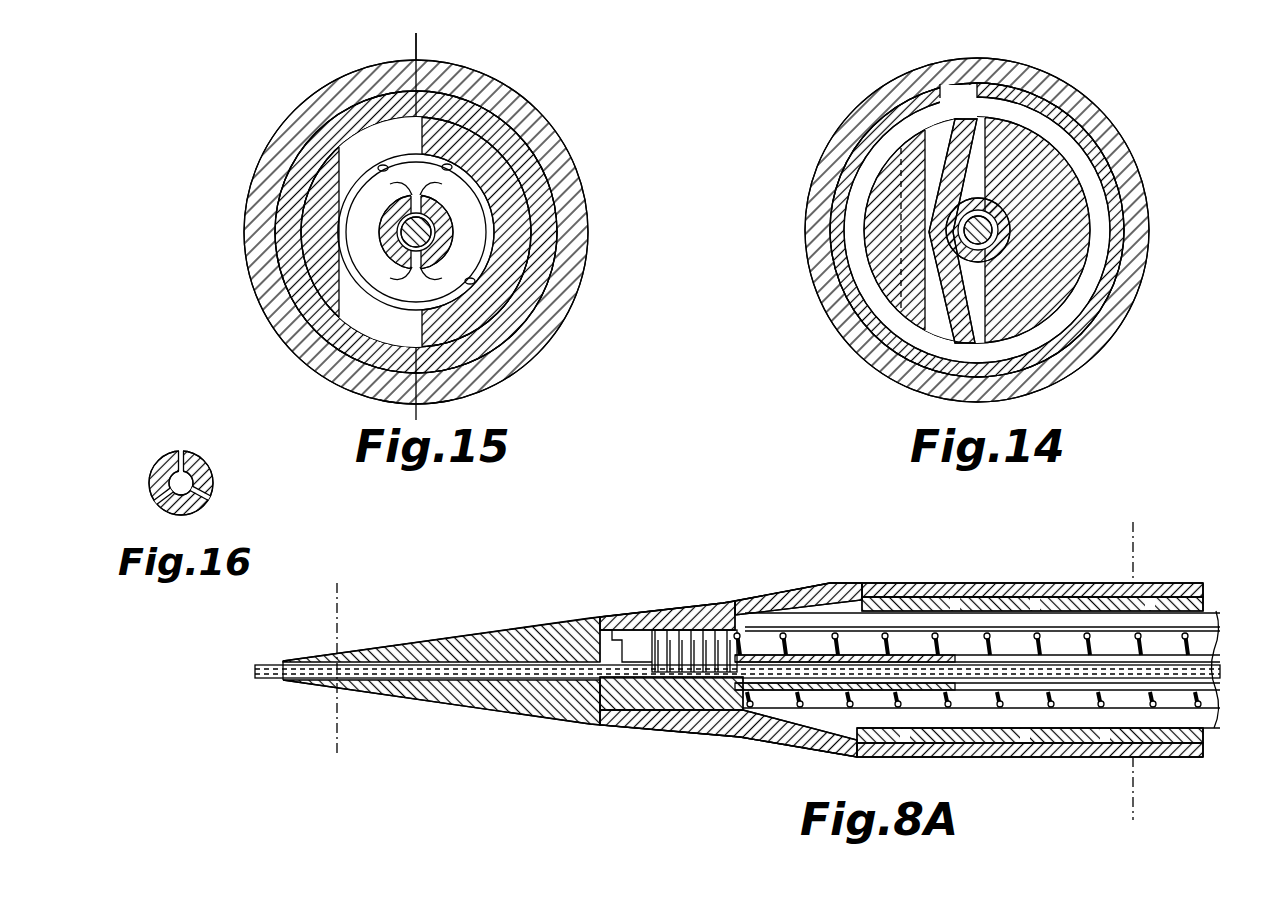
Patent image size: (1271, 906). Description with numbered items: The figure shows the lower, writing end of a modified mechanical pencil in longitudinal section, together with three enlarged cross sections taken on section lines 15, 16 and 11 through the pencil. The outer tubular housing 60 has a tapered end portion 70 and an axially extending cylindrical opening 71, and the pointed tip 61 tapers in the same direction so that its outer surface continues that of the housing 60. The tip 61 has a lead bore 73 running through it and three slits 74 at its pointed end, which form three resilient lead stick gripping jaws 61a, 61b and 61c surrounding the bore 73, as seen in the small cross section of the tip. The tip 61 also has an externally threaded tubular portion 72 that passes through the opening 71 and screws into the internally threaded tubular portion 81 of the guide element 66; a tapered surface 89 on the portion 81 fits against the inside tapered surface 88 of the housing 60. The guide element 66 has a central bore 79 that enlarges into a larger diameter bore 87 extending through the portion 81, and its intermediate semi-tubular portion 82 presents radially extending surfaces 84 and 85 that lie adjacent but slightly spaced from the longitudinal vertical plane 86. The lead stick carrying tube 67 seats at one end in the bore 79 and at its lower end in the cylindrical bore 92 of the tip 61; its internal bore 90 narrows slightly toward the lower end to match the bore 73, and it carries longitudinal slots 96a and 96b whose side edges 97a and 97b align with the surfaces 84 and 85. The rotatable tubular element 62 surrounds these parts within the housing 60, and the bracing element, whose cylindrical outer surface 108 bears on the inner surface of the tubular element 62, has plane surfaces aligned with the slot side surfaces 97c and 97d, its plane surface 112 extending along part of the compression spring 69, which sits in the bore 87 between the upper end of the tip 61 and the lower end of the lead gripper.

In FIG. 15, the cylindrical outer surface 108 is at (305, 177).
In FIG. 14, the cylindrical outer surface 108 is at (868, 207).
In FIG. 15, the radially extending surface 84 is at (419, 115).
In FIG. 14, the radially extending surface 84 is at (1025, 97).
In FIG. 15, the longitudinally extending slot 96a is at (415, 217).
In FIG. 15, the longitudinally extending slot 96b is at (416, 262).
In FIG. 15, the tubular element 62 is at (512, 143).
In FIG. 14, the tubular element 62 is at (1095, 178).
In FIG. 8A, the tubular element 62 is at (1035, 597).
In FIG. 15, the intermediate semi-tubular portion 82 is at (507, 203).
In FIG. 14, the intermediate semi-tubular portion 82 is at (1075, 220).
In FIG. 15, the larger diameter bore 87 is at (470, 292).
In FIG. 8A, the larger diameter bore 87 is at (1010, 633).
In FIG. 15, the longitudinally vertical plane 86 is at (418, 407).
In FIG. 15, the plane surface 112 is at (340, 297).
In FIG. 14, the plane surface 112 is at (901, 316).
In FIG. 15, the side edge of slot 97a is at (449, 193).
In FIG. 15, the side edge of slot 97b is at (447, 267).
In FIG. 15, the side surface of groove 97c is at (389, 193).
In FIG. 15, the side surface of groove 97d is at (389, 267).
In FIG. 14, the section line 11— 11 is at (930, 143).
In FIG. 14, the guide element 66 is at (1045, 158).
In FIG. 14, the internal bore 90 is at (980, 210).
In FIG. 14, the central bore 79 is at (980, 250).
In FIG. 8A, the pointed tip 61 is at (463, 627).
In FIG. 16, the lead stick gripping jaw 61a is at (205, 466).
In FIG. 16, the lead stick gripping jaw 61b is at (165, 462).
In FIG. 16, the lead stick gripping jaw 61c is at (168, 506).
In FIG. 16, the slit 74 is at (152, 498).
In FIG. 8A, the section line 16— 16 is at (313, 585).
In FIG. 8A, the section line 15— 15 is at (1108, 525).
In FIG. 8A, the lead bore 73 is at (483, 678).
In FIG. 8A, the cylindrical bore 92 is at (623, 684).
In FIG. 8A, the tubular portion 72 is at (647, 692).
In FIG. 8A, the tubular portion 81 is at (748, 722).
In FIG. 8A, the cylindrical opening 71 is at (622, 633).
In FIG. 8A, the tapered end portion 70 is at (657, 607).
In FIG. 8A, the tapered surface 89 is at (723, 615).
In FIG. 8A, the inside tapered surface 88 is at (813, 600).
In FIG. 8A, the lead stick carrying tube 67 is at (870, 594).
In FIG. 8A, the outer tubular housing 60 is at (928, 584).
In FIG. 8A, the radially extending surface 85 is at (1010, 722).
In FIG. 8A, the compression spring 69 is at (1100, 710).